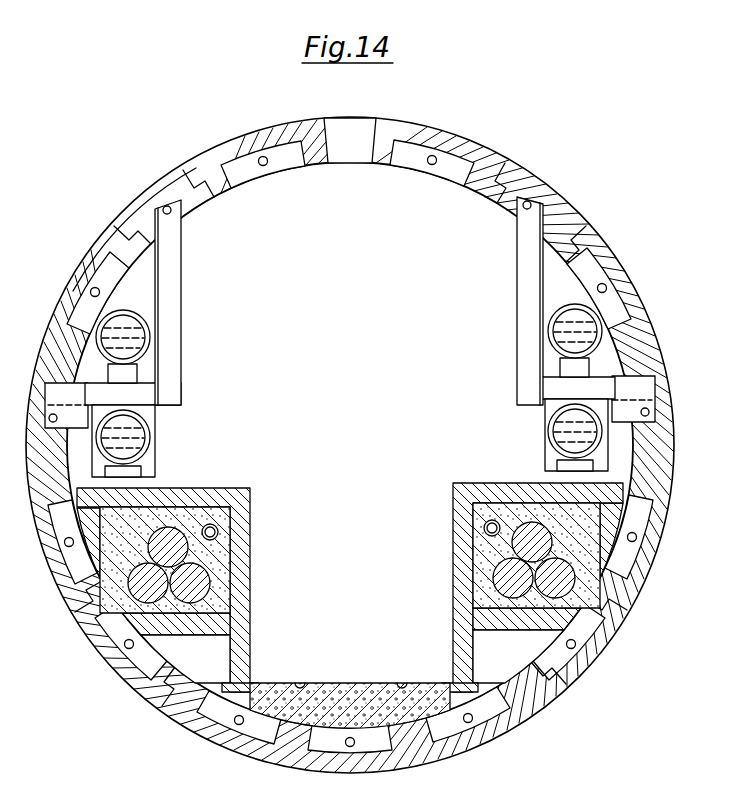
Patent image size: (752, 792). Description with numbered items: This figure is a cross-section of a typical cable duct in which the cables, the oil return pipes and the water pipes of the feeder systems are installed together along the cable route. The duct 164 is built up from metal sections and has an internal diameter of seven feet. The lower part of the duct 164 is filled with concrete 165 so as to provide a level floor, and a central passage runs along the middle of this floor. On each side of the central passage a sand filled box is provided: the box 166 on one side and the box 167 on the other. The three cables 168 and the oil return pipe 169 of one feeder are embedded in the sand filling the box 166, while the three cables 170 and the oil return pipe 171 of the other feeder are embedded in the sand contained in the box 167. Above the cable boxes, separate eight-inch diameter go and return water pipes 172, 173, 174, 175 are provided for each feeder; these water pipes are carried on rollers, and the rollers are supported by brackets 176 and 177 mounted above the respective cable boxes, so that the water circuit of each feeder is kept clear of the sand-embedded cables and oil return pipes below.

The duct 164 is at (475, 160).
The concrete 165 is at (325, 692).
The sand filled box 166 is at (242, 523).
The sand filled box 167 is at (460, 500).
The cables 168 is at (186, 565).
The oil return pipe 169 is at (228, 522).
The cables 170 is at (524, 544).
The oil return pipe 171 is at (485, 528).
The water pipe 172 is at (124, 340).
The water pipe 173 is at (132, 438).
The water pipe 174 is at (565, 331).
The water pipe 175 is at (566, 433).
The bracket 176 is at (168, 247).
The bracket 177 is at (527, 255).